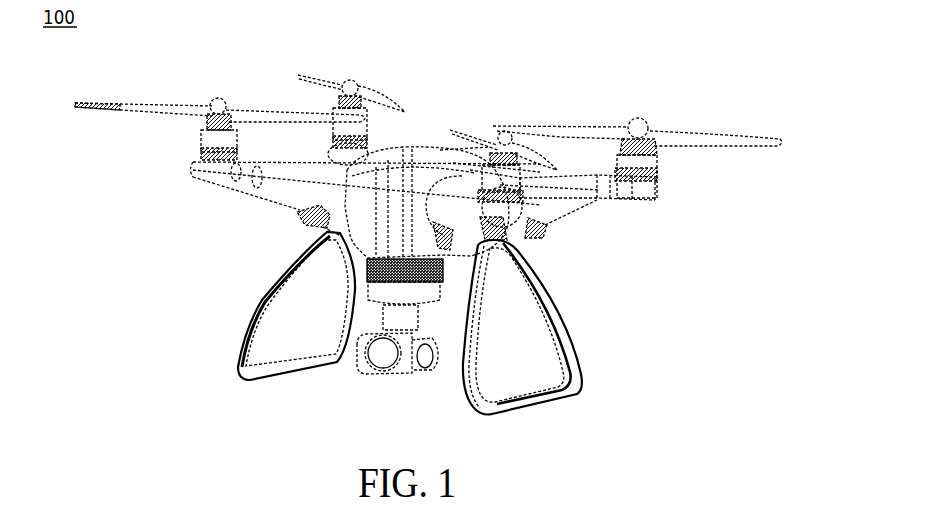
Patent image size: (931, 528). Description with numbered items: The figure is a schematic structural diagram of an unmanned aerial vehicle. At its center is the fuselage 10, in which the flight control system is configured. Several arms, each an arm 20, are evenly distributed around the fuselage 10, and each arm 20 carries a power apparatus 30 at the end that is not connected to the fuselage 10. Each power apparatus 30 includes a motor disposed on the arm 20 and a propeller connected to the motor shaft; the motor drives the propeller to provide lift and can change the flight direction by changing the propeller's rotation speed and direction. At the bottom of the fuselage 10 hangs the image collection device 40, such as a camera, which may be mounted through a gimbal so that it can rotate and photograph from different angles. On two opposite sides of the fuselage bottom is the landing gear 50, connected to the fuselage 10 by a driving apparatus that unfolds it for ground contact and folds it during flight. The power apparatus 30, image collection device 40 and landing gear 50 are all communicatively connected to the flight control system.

The fuselage 10 is at (399, 217).
The arm 20 is at (587, 207).
The power apparatus 30 is at (208, 136).
The image collection device 40 is at (388, 356).
The landing gear 50 is at (248, 328).